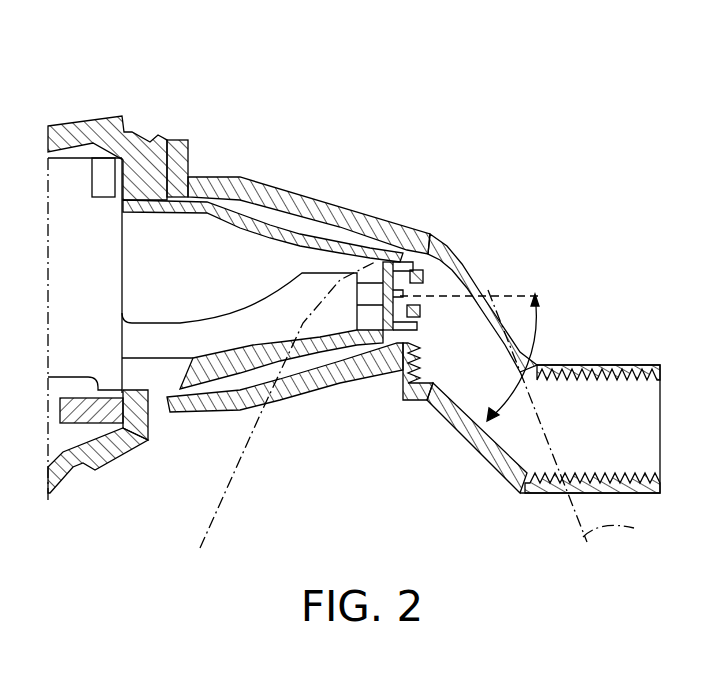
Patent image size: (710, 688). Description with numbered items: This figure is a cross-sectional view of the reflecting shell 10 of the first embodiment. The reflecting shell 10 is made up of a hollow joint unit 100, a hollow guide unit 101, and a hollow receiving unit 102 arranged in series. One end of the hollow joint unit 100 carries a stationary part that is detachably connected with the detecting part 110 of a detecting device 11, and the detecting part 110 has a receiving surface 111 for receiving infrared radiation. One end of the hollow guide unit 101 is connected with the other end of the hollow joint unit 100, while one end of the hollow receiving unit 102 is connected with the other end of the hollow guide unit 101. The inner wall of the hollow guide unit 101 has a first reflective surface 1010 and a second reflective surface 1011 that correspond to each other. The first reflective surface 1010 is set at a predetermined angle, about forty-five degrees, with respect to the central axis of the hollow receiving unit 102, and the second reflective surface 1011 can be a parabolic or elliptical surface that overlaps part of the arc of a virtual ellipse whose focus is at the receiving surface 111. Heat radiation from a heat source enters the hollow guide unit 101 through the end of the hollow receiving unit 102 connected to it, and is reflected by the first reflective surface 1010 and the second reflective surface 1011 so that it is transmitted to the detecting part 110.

The reflecting shell 10 is at (456, 241).
The detecting device 11 is at (89, 112).
The hollow joint unit 100 is at (350, 217).
The hollow guide unit 101 is at (598, 14).
The first reflective surface 1010 is at (472, 430).
The second reflective surface 1011 is at (507, 323).
The hollow receiving unit 102 is at (608, 367).
The detecting part 110 is at (267, 228).
The receiving surface 111 is at (398, 289).